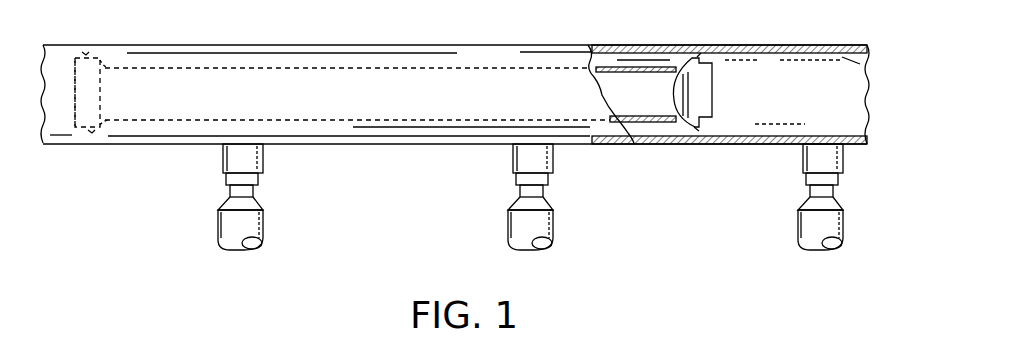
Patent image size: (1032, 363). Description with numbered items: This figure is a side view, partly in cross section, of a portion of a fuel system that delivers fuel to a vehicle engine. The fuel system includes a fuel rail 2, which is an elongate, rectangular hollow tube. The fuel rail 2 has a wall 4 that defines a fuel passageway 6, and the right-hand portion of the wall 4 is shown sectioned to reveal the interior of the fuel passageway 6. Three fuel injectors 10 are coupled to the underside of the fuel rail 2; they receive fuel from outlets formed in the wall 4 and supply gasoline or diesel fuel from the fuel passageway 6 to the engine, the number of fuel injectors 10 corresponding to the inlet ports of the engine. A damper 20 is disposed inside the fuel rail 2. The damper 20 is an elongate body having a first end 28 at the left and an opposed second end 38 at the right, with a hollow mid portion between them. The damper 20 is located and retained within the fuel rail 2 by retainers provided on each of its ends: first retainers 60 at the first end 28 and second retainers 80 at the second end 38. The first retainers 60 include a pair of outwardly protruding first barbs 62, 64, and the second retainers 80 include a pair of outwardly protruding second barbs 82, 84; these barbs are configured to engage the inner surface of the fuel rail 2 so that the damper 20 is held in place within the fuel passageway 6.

The fuel rail 2 is at (413, 45).
The wall 4 is at (772, 45).
The fuel passageway 6 is at (860, 64).
The fuel injectors 10 is at (266, 226).
The damper 20 is at (637, 105).
The first end 28 is at (74, 114).
The second end 38 is at (715, 95).
The first retainers 60 is at (87, 52).
The first barb 62 is at (115, 34).
The first barb 64 is at (93, 133).
The second retainers 80 is at (696, 57).
The second barb 82 is at (700, 12).
The second barb 84 is at (695, 127).